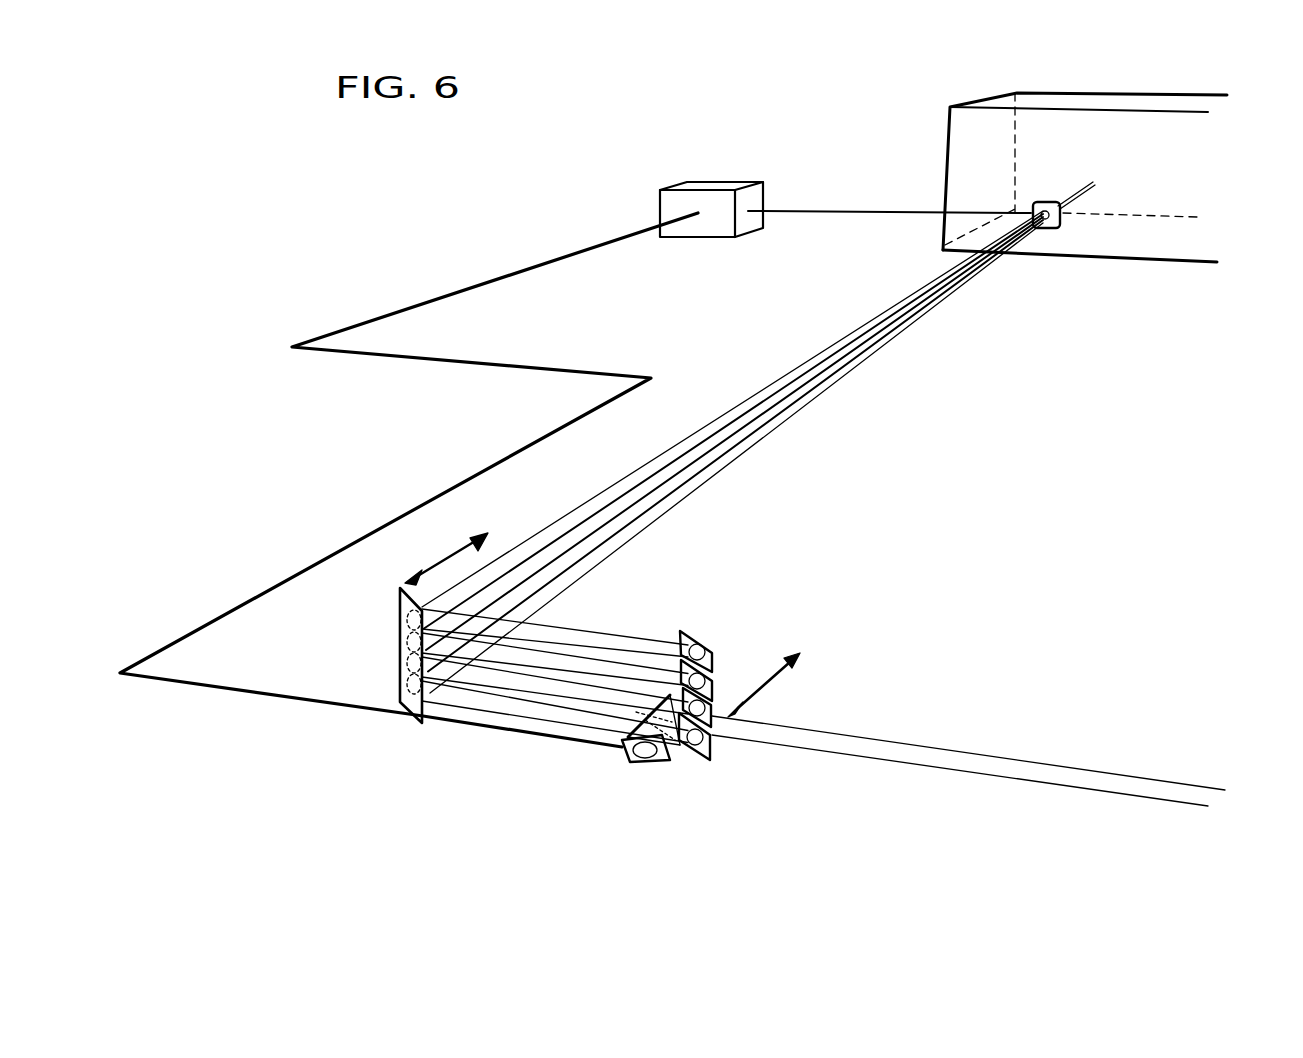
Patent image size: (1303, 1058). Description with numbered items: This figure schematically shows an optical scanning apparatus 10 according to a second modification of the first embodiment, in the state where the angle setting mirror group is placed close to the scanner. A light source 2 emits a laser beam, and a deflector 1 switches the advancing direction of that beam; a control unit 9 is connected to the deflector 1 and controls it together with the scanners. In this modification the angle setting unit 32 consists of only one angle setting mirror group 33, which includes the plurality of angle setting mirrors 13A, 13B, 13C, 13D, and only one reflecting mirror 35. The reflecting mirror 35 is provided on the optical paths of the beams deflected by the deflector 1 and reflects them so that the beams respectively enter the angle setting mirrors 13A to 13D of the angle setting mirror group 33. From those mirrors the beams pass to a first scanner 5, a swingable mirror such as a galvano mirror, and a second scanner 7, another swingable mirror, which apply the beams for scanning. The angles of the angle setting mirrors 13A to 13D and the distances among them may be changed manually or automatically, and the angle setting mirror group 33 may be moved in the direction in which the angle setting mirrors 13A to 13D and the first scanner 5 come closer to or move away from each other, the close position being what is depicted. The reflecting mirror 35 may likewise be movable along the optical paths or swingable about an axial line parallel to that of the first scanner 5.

The deflector 1 is at (1045, 228).
The light source 2 is at (948, 128).
The first scanner 5 is at (650, 762).
The second scanner 7 is at (642, 707).
The control unit 9 is at (724, 182).
The optical scanning apparatus 10 is at (1185, 420).
The angle setting mirror 13A is at (680, 630).
The angle setting mirror 13B is at (713, 683).
The angle setting mirror 13C is at (711, 723).
The angle setting mirror 13D is at (702, 760).
The angle setting unit 32 is at (383, 730).
The angle setting mirror group 33 is at (729, 682).
The reflecting mirror 35 is at (400, 626).